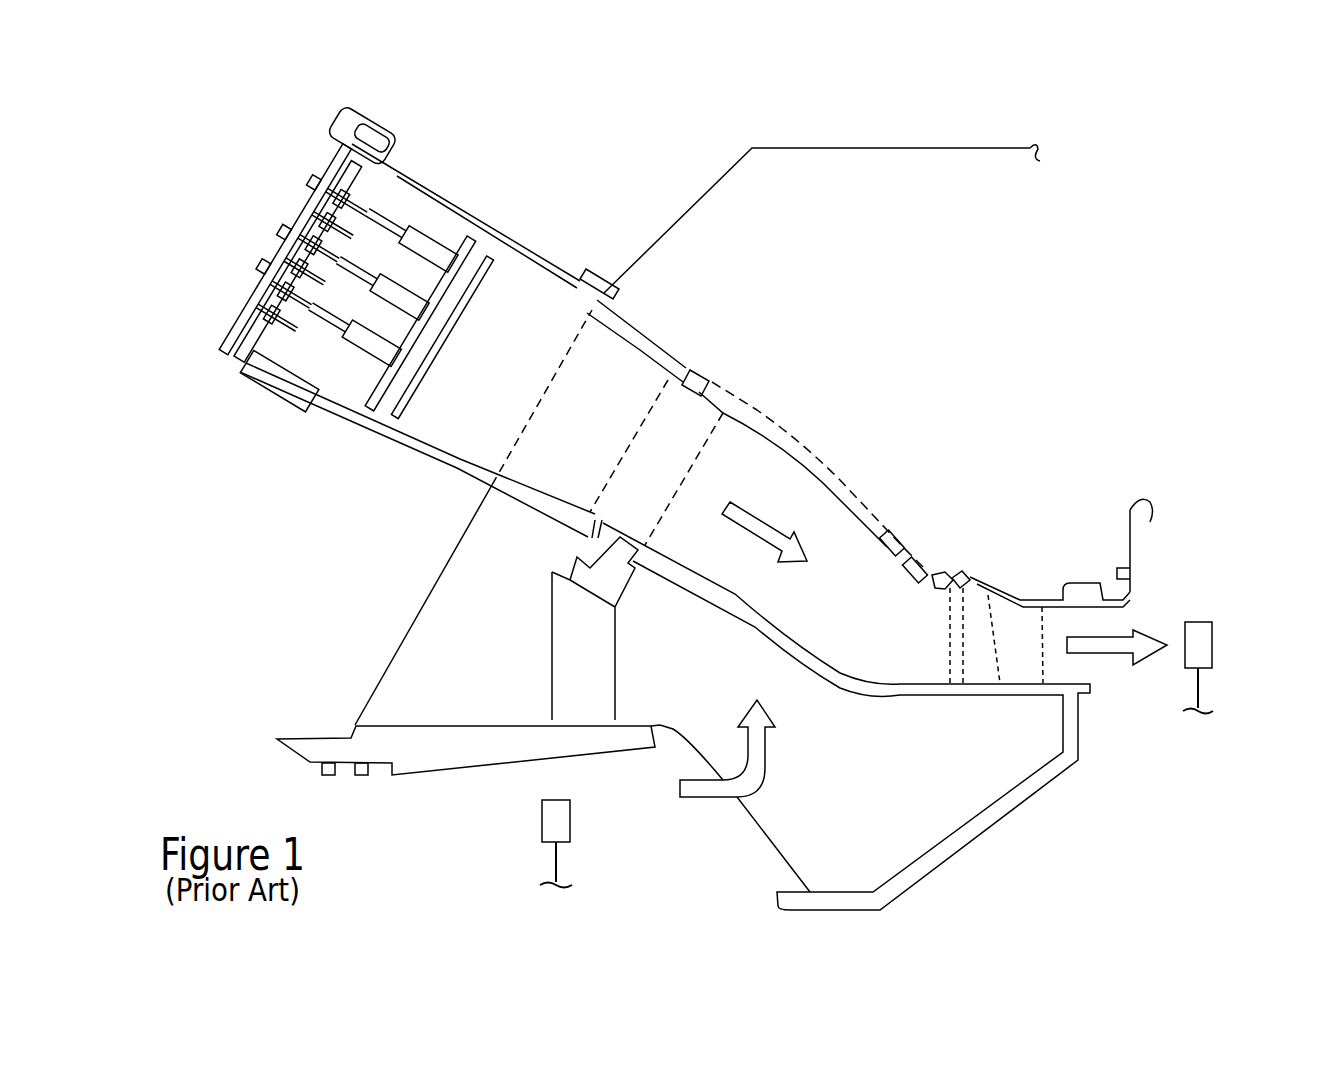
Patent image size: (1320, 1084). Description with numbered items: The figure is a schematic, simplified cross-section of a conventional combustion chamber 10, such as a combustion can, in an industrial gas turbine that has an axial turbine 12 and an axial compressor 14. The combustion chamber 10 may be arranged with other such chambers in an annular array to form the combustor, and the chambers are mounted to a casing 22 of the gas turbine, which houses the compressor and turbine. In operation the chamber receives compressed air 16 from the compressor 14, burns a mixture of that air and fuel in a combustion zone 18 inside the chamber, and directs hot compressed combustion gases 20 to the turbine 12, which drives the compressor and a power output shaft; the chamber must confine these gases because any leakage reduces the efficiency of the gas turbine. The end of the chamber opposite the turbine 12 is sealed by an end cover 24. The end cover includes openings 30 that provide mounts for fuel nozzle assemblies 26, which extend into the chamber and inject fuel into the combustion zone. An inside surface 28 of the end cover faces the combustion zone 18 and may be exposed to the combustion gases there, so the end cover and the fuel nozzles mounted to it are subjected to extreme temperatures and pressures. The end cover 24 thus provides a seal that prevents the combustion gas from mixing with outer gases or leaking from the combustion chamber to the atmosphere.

The combustion chamber 10 is at (550, 132).
The axial turbine 12 is at (1197, 647).
The axial compressor 14 is at (557, 820).
The compressed air 16 is at (757, 747).
The combustion zone 18 is at (476, 378).
The hot compressed combustion gases 20 is at (1113, 650).
The casing 22 is at (762, 150).
The end cover 24 is at (303, 363).
The fuel nozzle assemblies 26 is at (397, 297).
The inside surface 28 is at (418, 378).
The openings 30 is at (352, 290).